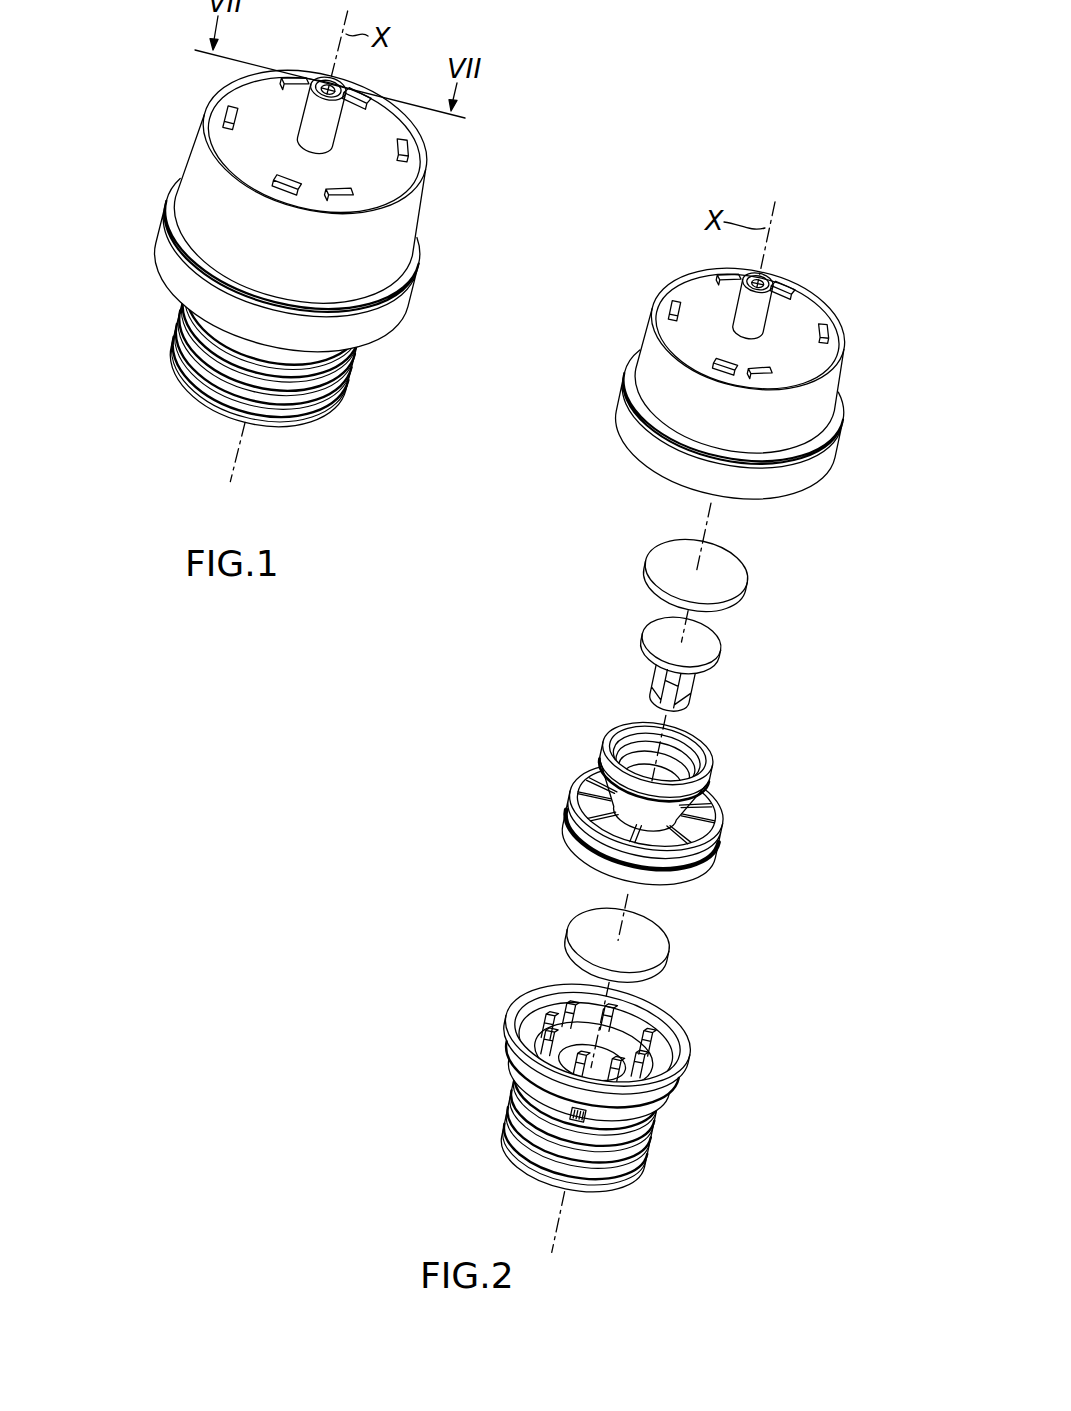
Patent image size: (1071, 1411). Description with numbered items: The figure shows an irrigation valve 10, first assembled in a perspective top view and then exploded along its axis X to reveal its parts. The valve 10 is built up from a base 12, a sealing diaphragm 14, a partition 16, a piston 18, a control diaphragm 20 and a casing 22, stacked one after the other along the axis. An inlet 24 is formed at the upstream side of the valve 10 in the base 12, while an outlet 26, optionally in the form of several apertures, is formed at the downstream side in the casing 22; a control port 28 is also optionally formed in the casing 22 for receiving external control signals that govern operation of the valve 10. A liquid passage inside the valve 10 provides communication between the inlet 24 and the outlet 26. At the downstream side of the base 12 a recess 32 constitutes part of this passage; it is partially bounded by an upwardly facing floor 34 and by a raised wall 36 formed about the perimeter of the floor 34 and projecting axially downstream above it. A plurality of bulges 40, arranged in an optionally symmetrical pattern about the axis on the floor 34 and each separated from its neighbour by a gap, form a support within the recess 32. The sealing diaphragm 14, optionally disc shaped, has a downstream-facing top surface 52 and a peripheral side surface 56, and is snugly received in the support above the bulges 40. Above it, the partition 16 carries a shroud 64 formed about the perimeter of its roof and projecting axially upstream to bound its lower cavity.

In FIG. 1, the irrigation valve 10 is at (267, 260).
In FIG. 2, the irrigation valve 10 is at (662, 740).
In FIG. 1, the base 12 is at (215, 380).
In FIG. 2, the base 12 is at (572, 1112).
In FIG. 2, the sealing diaphragm 14 is at (632, 948).
In FIG. 2, the partition 16 is at (657, 805).
In FIG. 2, the piston 18 is at (626, 648).
In FIG. 2, the control diaphragm 20 is at (738, 591).
In FIG. 1, the casing 22 is at (297, 211).
In FIG. 2, the casing 22 is at (732, 383).
In FIG. 1, the inlet 24 is at (302, 430).
In FIG. 2, the inlet 24 is at (599, 1212).
In FIG. 1, the outlet 26 is at (218, 114).
In FIG. 2, the outlet 26 is at (670, 311).
In FIG. 1, the control port 28 is at (317, 118).
In FIG. 2, the control port 28 is at (757, 315).
In FIG. 2, the recess 32 is at (571, 996).
In FIG. 2, the floor 34 is at (612, 1017).
In FIG. 2, the raised wall 36 is at (673, 1043).
In FIG. 2, the bulges 40 is at (535, 1023).
In FIG. 2, the top surface 52 is at (580, 923).
In FIG. 2, the peripheral side surface 56 is at (645, 965).
In FIG. 2, the shroud 64 is at (570, 825).